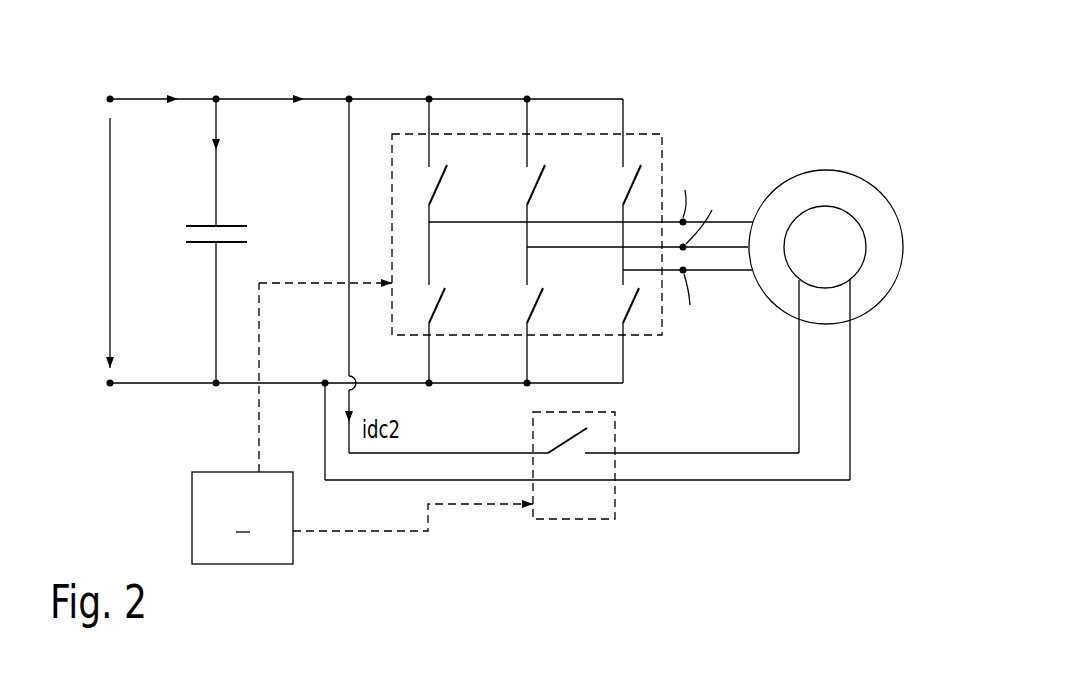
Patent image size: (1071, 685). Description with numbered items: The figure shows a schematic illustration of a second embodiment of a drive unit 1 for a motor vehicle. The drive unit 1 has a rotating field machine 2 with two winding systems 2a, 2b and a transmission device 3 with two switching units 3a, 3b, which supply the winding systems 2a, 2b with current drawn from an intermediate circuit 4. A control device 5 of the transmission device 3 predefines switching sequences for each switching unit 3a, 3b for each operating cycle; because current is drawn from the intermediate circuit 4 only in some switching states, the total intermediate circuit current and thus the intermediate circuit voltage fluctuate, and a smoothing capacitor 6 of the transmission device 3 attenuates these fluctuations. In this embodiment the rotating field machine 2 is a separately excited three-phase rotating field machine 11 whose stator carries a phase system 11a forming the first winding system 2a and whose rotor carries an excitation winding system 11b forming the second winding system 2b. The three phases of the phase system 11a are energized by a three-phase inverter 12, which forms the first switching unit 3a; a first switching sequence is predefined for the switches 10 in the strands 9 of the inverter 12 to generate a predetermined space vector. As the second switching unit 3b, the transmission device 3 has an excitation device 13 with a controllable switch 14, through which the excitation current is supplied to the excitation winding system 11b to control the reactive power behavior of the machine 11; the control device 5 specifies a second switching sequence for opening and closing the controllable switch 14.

The drive unit 1 is at (90, 88).
The rotating field machine 2 is at (833, 287).
The first winding system 2a is at (792, 162).
The second winding system 2b is at (843, 192).
The transmission device 3 is at (572, 224).
The first switching unit 3a is at (650, 132).
The second switching unit 3b is at (597, 520).
The intermediate circuit 4 is at (103, 235).
The control device 5 is at (362, 423).
The smoothing capacitor 6 is at (236, 226).
The strands 9 is at (432, 366).
The switches 10 is at (437, 309).
The separately excited three-phase rotating field machine 11 is at (858, 300).
The phase system 11a is at (860, 320).
The excitation winding system 11b is at (822, 205).
The three-phase inverter 12 is at (475, 160).
The excitation device 13 is at (574, 492).
The controllable switch 14 is at (573, 437).